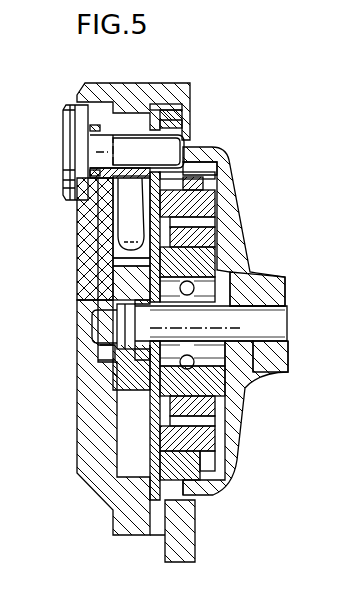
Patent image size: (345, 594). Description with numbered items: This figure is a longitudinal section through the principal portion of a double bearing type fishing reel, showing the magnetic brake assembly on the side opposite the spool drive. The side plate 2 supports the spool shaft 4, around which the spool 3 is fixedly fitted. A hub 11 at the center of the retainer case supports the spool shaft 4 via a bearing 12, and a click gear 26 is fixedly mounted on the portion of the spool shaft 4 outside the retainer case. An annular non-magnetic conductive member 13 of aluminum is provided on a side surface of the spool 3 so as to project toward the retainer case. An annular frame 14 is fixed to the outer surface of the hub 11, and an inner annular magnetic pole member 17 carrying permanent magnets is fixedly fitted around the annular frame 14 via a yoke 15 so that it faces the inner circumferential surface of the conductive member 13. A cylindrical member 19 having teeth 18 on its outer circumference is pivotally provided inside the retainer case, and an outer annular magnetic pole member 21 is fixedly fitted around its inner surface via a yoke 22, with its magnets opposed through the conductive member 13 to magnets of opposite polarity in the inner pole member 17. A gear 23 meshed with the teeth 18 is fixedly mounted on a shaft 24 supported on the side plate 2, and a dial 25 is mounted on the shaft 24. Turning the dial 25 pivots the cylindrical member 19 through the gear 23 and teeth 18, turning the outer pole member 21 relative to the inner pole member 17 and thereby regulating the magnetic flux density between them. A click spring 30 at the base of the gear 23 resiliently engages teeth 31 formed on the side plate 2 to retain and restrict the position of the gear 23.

The side plate 2 is at (122, 88).
The spool 3 is at (217, 152).
The spool shaft 4 is at (280, 325).
The hub 11 is at (213, 383).
The bearing 12 is at (210, 285).
The annular non-magnetic conductive member 13 is at (180, 220).
The annular frame 14 is at (213, 400).
The yoke 15 is at (213, 420).
The inner annular magnetic pole member 17 is at (200, 240).
The teeth 18 is at (227, 167).
The cylindrical member 19 is at (100, 210).
The outer annular magnetic pole member 21 is at (203, 200).
The yoke 22 is at (222, 183).
The gear 23 is at (167, 113).
The shaft 24 is at (120, 147).
The dial 25 is at (65, 127).
The click gear 26 is at (100, 368).
The click spring 30 is at (112, 240).
The teeth 31 is at (112, 278).